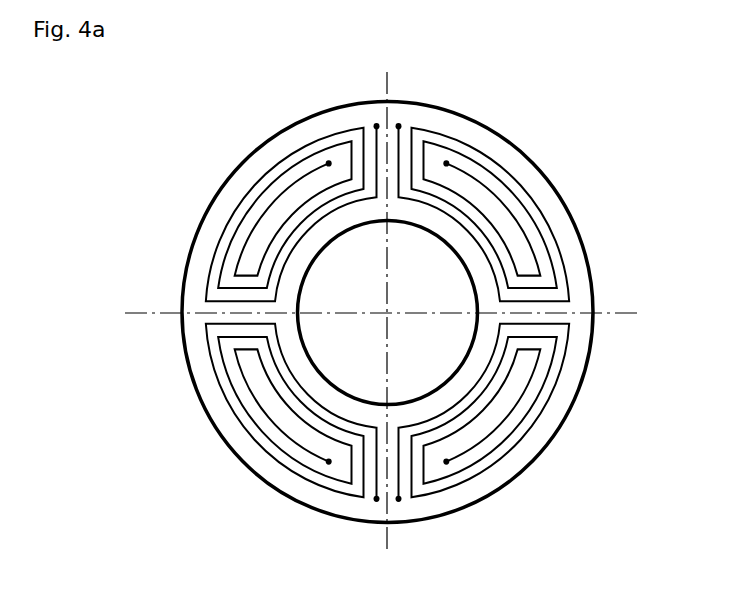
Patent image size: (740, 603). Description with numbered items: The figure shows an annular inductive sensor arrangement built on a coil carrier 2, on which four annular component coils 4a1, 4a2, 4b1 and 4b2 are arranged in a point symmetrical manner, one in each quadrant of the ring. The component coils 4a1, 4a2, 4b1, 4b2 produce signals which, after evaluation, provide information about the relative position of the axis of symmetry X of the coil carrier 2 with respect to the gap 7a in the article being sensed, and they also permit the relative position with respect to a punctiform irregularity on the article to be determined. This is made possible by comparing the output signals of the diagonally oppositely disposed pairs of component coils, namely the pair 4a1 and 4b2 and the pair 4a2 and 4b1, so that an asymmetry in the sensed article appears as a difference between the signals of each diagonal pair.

The coil carrier 2 is at (585, 247).
The component coil 4a1 is at (250, 192).
The component coil 4a2 is at (523, 190).
The component coil 4b1 is at (260, 445).
The component coil 4b2 is at (514, 445).
The gap 7a is at (408, 315).
The axis of symmetry X is at (570, 320).